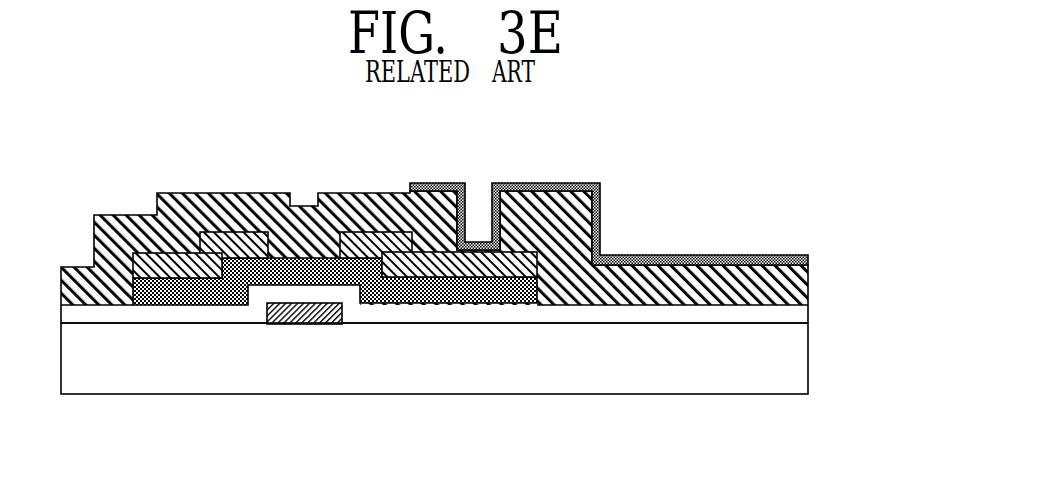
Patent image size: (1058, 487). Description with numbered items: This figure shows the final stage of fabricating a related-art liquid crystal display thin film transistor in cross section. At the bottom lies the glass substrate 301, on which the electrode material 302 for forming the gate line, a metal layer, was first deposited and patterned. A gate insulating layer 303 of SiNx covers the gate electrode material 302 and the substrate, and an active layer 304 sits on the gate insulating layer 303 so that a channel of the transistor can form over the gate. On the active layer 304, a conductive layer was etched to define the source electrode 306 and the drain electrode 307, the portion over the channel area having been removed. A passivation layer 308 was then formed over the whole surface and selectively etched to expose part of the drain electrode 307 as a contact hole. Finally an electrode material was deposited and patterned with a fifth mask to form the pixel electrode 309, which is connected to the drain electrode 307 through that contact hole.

The glass substrate 301 is at (802, 368).
The electrode material for forming a gate line 302 is at (308, 325).
The gate insulating layer 303 is at (802, 317).
The active layer 304 is at (417, 295).
The source electrode 306 is at (191, 279).
The drain electrode 307 is at (497, 278).
The passivation layer 308 is at (808, 280).
The pixel electrode 309 is at (728, 255).